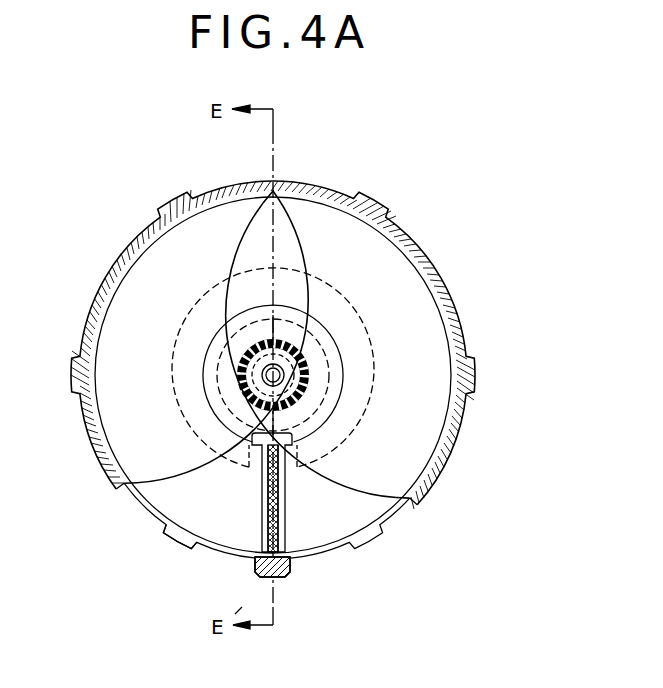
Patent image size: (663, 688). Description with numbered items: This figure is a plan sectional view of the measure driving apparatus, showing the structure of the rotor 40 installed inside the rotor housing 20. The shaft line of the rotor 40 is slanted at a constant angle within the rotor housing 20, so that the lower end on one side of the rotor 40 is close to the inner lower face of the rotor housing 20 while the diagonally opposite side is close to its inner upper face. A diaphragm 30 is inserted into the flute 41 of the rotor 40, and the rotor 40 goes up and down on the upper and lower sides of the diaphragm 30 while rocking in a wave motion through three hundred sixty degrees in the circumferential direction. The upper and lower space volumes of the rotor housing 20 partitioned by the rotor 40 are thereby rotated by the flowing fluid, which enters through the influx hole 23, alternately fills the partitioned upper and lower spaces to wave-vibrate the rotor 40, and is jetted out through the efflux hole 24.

The rotor housing 20 is at (488, 403).
The influx hole 23 is at (162, 527).
The efflux hole 24 is at (300, 579).
The diaphragm 30 is at (265, 508).
The rotor 40 is at (432, 446).
The flute 41 is at (287, 508).